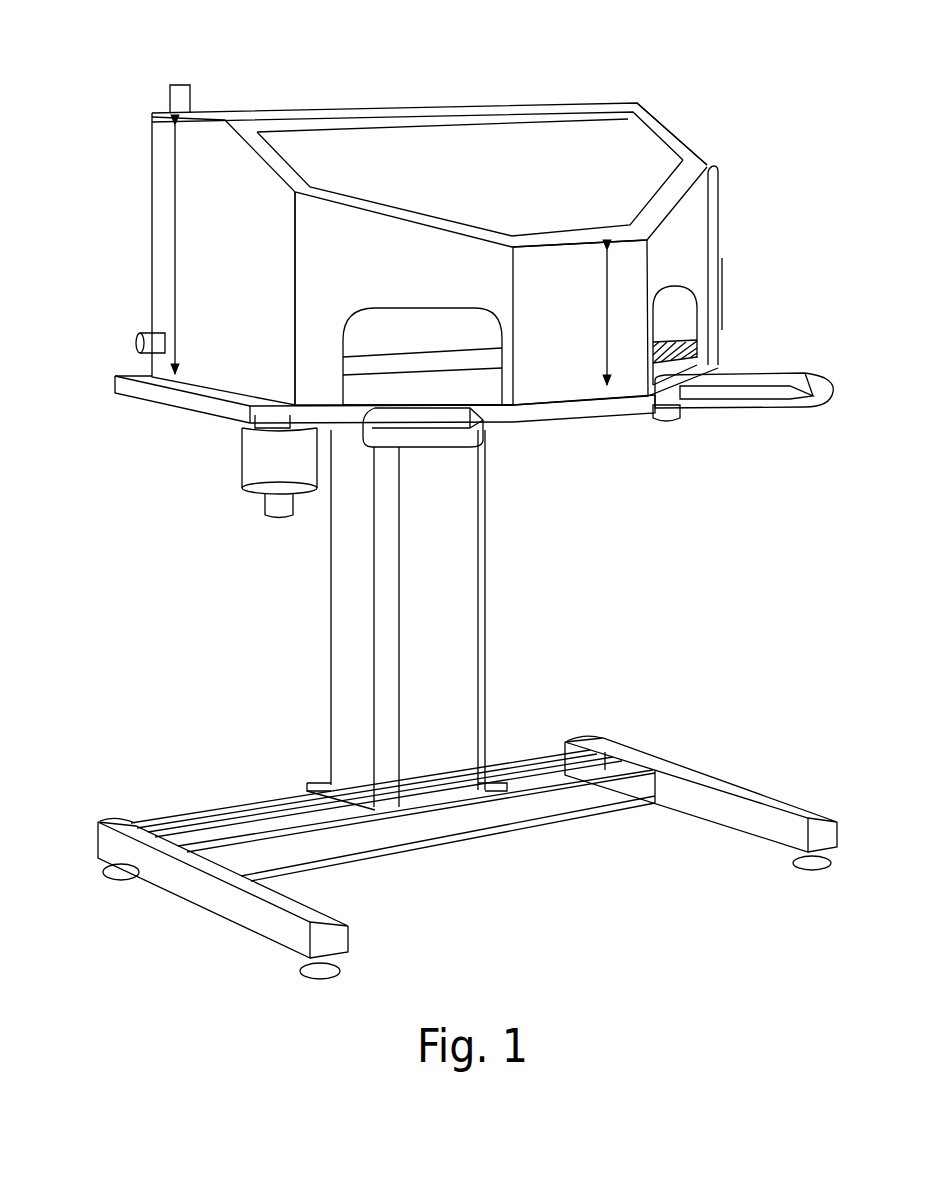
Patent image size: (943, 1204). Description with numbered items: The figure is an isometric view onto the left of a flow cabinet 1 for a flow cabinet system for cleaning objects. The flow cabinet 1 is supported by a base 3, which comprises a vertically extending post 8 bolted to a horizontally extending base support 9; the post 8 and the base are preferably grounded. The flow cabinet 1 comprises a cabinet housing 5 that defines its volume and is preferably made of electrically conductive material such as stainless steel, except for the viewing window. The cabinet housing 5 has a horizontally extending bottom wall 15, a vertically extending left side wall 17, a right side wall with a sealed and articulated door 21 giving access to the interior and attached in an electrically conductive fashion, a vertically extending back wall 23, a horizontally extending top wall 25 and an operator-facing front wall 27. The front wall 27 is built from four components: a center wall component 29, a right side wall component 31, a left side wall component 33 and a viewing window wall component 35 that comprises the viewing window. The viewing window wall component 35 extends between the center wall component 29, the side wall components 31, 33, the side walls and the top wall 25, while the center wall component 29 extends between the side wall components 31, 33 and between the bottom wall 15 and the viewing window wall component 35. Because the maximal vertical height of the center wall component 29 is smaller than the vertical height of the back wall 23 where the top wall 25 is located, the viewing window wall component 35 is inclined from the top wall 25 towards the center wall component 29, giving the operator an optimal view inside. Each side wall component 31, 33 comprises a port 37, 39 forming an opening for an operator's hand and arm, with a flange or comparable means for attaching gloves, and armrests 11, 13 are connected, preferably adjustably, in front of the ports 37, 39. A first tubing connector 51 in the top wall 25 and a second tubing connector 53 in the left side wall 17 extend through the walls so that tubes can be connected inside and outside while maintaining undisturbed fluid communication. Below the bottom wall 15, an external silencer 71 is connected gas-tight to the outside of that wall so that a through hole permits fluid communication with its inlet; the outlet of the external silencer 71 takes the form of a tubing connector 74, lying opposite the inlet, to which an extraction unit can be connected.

The flow cabinet 1 is at (705, 68).
The base 3 is at (692, 572).
The cabinet housing 5 is at (754, 233).
The post 8 is at (486, 651).
The base support 9 is at (737, 777).
The armrest 11 is at (432, 455).
The armrest 13 is at (740, 392).
The bottom wall 15 is at (575, 420).
The left side wall 17 is at (158, 186).
The door 21 is at (718, 285).
The back wall 23 is at (372, 322).
The top wall 25 is at (300, 108).
The front wall 27 is at (665, 152).
The center wall component 29 is at (527, 392).
The right side wall component 31 is at (718, 196).
The left side wall component 33 is at (310, 318).
The viewing window wall component 35 is at (540, 130).
The port 37 is at (447, 304).
The port 39 is at (676, 280).
The first tubing connector 51 is at (175, 98).
The second tubing connector 53 is at (140, 345).
The external silencer 71 is at (244, 466).
The tubing connector 74 is at (266, 511).